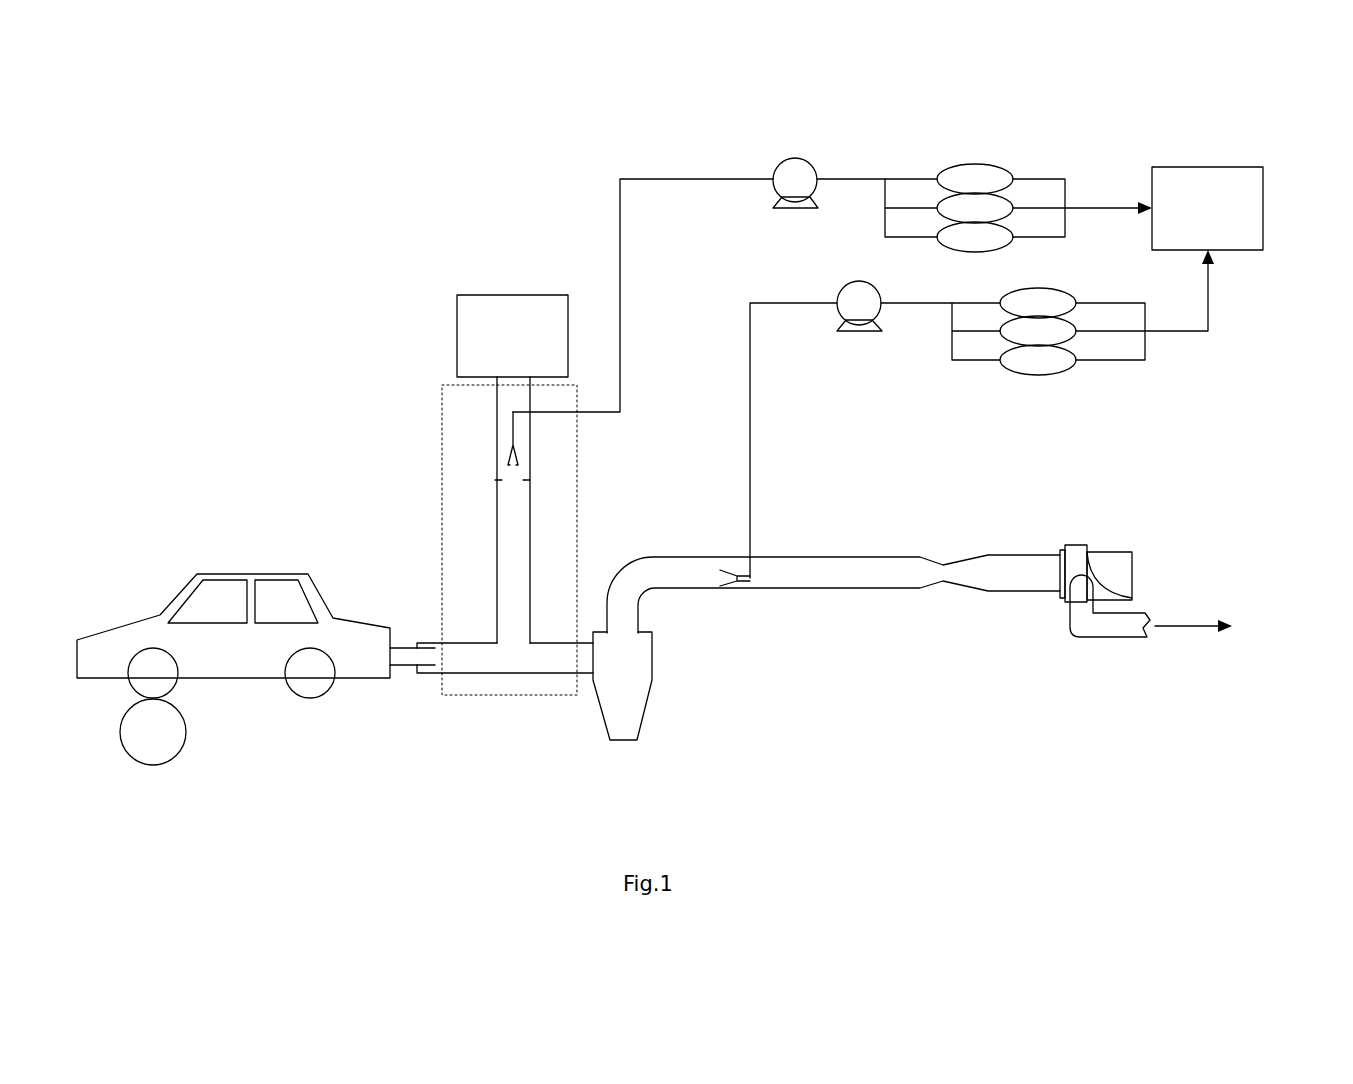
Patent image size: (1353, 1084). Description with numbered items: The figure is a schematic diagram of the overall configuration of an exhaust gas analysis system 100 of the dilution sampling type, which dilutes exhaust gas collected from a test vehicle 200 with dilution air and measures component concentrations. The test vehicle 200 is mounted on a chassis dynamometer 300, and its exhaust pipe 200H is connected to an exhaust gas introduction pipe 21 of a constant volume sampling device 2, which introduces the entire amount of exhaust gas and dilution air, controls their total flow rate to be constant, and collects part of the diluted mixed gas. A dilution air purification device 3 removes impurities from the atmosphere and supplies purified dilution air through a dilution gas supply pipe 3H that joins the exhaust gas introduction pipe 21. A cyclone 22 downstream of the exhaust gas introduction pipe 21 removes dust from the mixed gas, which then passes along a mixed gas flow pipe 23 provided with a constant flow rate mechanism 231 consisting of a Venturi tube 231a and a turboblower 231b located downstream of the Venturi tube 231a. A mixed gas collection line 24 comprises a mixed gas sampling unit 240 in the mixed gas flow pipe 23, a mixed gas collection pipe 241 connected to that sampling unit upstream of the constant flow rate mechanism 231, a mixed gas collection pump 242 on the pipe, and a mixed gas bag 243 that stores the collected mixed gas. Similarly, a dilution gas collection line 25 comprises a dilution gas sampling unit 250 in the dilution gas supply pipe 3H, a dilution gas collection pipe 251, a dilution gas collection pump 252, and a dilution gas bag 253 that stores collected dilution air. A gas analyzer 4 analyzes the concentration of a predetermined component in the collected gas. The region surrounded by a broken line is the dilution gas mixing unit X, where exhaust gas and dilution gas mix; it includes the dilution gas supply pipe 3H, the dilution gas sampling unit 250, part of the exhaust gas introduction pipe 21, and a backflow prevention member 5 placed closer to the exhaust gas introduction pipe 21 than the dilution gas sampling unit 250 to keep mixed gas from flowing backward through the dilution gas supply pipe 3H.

The exhaust gas analysis system 100 is at (368, 190).
The test vehicle 200 is at (178, 598).
The exhaust pipe 200H is at (405, 637).
The chassis dynamometer 300 is at (187, 720).
The dilution gas mixing unit X is at (442, 405).
The dilution air purification device 3 is at (513, 293).
The dilution gas supply pipe 3H is at (533, 505).
The backflow prevention member 5 is at (522, 460).
The dilution gas sampling unit 250 is at (507, 455).
The constant volume sampling device 2 is at (770, 682).
The exhaust gas introduction pipe 21 is at (512, 676).
The cyclone 22 is at (655, 688).
The mixed gas flow pipe 23 is at (783, 590).
The constant flow rate mechanism 231 is at (1033, 629).
The Venturi tube 231a is at (943, 583).
The turboblower 231b is at (1060, 600).
The mixed gas collection line 24 is at (876, 430).
The mixed gas sampling unit 240 is at (727, 569).
The mixed gas collection pipe 241 is at (751, 452).
The mixed gas collection pump 242 is at (858, 333).
The mixed gas bag 243 is at (1038, 376).
The dilution gas collection line 25 is at (659, 242).
The dilution gas collection pipe 251 is at (620, 199).
The dilution gas collection pump 252 is at (793, 210).
The dilution gas bag 253 is at (970, 163).
The gas analyzer 4 is at (1205, 165).